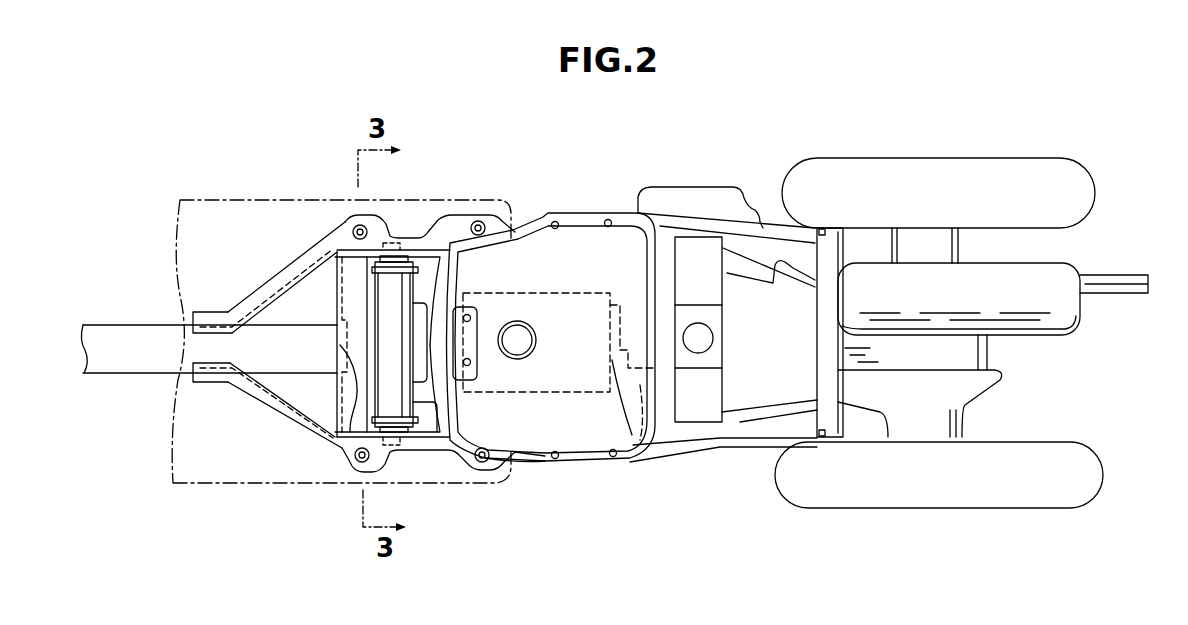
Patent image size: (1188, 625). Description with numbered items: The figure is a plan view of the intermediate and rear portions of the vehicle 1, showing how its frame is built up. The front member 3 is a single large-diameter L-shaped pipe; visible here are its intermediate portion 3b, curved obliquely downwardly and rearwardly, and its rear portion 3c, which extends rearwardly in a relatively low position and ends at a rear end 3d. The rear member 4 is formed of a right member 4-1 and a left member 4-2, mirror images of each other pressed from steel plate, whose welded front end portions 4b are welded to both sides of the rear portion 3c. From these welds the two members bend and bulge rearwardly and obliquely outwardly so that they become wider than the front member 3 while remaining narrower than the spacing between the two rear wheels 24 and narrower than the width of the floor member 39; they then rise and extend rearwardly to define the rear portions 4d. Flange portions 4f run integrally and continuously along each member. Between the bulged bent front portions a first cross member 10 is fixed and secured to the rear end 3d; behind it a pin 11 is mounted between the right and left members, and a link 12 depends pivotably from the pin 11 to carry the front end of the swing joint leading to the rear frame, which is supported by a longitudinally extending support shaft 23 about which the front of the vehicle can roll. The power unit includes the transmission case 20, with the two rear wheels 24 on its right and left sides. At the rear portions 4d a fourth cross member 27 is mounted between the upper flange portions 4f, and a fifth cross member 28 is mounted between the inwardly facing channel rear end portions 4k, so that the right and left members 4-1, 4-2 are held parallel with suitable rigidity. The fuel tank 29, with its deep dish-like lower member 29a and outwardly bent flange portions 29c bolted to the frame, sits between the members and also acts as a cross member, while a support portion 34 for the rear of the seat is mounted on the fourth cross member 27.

The vehicle 1 is at (714, 180).
The front member 3 is at (125, 333).
The intermediate portion 3b is at (102, 368).
The rear portion 3c is at (285, 332).
The rear end 3d is at (340, 437).
The rear member 4 is at (250, 290).
The right member 4-1 is at (460, 460).
The left member 4-2 is at (450, 226).
The welded front end portions 4b is at (198, 313).
The rear portions 4d is at (706, 228).
The flange portions 4f is at (330, 238).
The rear end portions 4k is at (815, 228).
The first cross member 10 is at (362, 422).
The pin 11 is at (398, 367).
The link 12 is at (428, 278).
The transmission case 20 is at (982, 363).
The support shaft 23 is at (637, 440).
The rear wheels 24 is at (979, 163).
The fourth cross member 27 is at (717, 385).
The fifth cross member 28 is at (826, 345).
The fuel tank 29 is at (592, 245).
The lower member 29a is at (585, 433).
The flange portions 29c is at (602, 458).
The support portion 34 is at (708, 340).
The floor member 39 is at (193, 487).